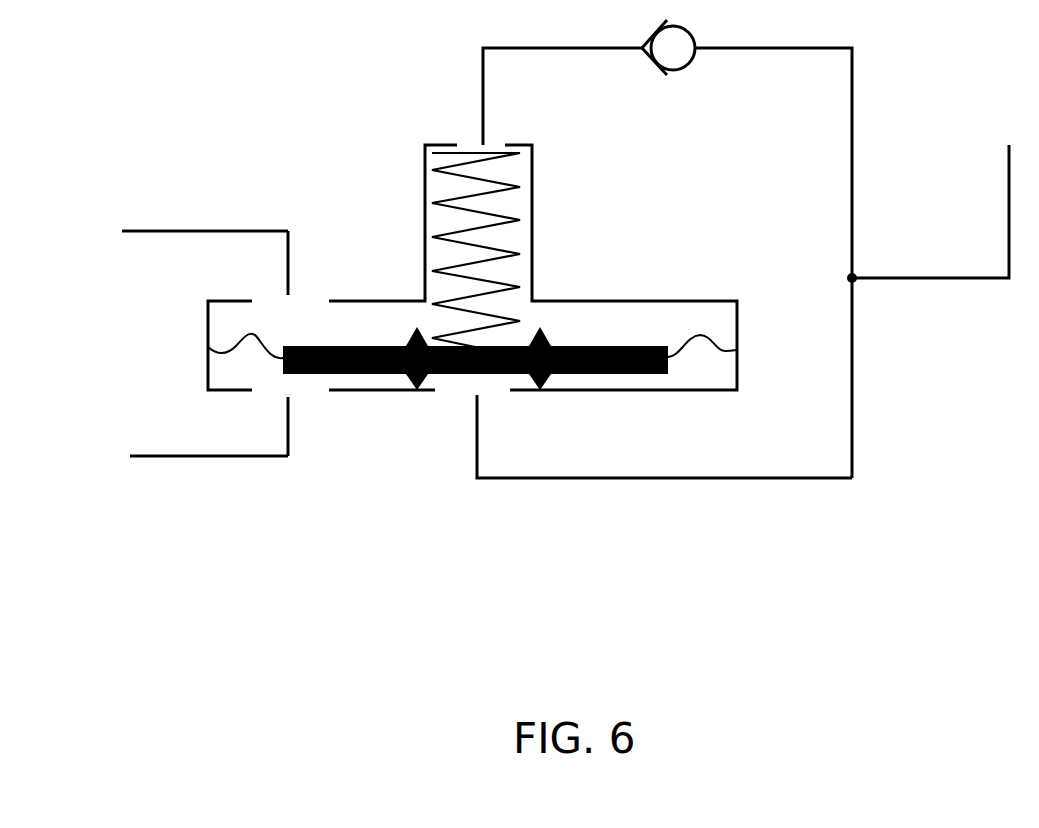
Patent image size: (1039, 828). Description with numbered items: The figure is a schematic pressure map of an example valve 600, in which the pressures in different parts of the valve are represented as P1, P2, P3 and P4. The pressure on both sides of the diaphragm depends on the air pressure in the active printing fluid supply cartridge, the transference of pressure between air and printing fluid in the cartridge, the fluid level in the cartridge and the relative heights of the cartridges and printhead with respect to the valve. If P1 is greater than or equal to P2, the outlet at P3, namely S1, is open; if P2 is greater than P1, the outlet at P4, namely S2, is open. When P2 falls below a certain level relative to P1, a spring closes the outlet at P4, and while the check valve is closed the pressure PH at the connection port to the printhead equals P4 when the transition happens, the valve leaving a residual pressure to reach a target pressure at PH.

The valve 600 is at (680, 638).
The pressure P1 is at (290, 278).
The pressure P2 is at (290, 400).
The pressure P3 is at (482, 125).
The pressure P4 is at (475, 410).
The first outlet S1 is at (181, 231).
The second outlet S2 is at (187, 456).
The connection port to the printhead PH is at (934, 195).